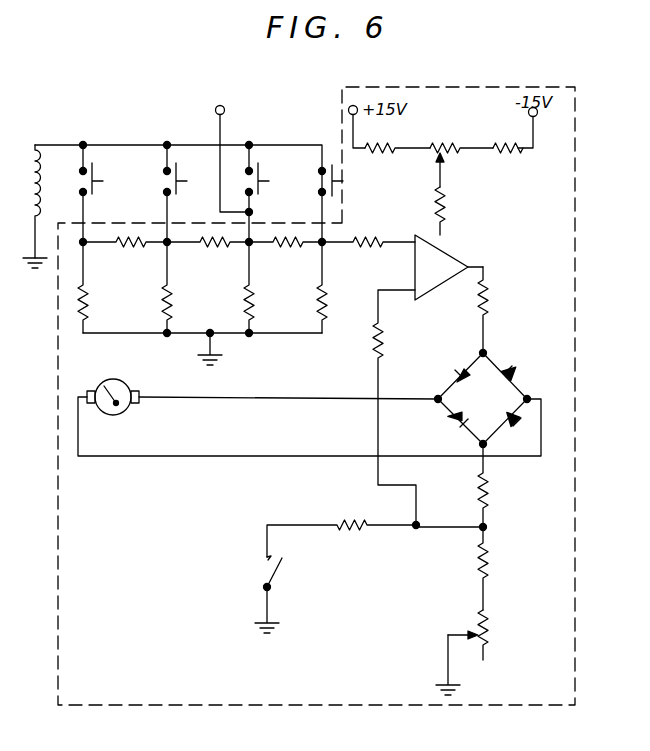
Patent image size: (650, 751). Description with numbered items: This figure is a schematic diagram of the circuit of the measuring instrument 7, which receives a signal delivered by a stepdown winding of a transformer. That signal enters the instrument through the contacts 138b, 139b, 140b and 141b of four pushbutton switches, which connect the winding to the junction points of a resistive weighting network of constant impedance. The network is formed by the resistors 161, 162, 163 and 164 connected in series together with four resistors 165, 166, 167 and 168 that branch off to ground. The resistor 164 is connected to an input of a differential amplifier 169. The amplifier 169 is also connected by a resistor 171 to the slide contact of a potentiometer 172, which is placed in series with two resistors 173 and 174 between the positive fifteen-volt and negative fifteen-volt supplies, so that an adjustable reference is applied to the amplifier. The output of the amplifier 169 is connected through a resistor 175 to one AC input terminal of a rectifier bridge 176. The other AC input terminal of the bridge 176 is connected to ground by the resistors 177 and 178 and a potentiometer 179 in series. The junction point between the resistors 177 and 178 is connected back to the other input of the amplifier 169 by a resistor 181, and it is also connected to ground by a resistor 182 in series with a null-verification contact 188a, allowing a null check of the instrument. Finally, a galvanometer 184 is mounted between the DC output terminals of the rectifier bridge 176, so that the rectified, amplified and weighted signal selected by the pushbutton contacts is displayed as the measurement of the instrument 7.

The measuring instrument 7 is at (57, 492).
The contact 141b is at (88, 168).
The contact 140b is at (172, 168).
The contact 139b is at (253, 168).
The contact 138b is at (320, 177).
The resistor 161 is at (133, 253).
The resistor 162 is at (222, 253).
The resistor 163 is at (301, 253).
The resistor 164 is at (383, 253).
The resistor 165 is at (90, 309).
The resistor 166 is at (181, 305).
The resistor 167 is at (256, 308).
The resistor 168 is at (341, 287).
The differential amplifier 169 is at (452, 264).
The resistor 171 is at (446, 203).
The potentiometer 172 is at (456, 140).
The resistor 173 is at (376, 154).
The resistor 174 is at (511, 150).
The resistor 175 is at (490, 303).
The rectifier bridge 176 is at (494, 407).
The resistor 177 is at (490, 495).
The resistor 178 is at (488, 551).
The potentiometer 179 is at (488, 623).
The resistor 181 is at (382, 345).
The resistor 182 is at (363, 522).
The galvanometer 184 is at (107, 381).
The null-verification contact 188a is at (280, 581).